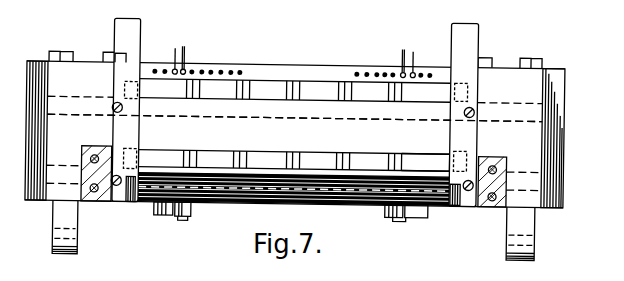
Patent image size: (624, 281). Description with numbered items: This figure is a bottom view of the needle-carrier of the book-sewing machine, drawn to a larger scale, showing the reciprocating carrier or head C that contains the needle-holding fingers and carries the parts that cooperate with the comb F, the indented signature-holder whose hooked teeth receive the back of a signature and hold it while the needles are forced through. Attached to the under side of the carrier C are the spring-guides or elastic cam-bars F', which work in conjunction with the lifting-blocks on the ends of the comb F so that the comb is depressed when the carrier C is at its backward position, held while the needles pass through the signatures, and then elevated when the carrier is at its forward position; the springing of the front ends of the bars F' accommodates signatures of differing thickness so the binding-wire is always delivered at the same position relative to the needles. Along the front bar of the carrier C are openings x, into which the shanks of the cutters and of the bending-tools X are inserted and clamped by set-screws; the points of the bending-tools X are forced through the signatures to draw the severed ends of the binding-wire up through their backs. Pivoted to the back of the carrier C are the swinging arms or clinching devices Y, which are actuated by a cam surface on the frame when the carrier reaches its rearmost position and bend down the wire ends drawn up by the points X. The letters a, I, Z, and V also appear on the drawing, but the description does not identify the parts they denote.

The end block a is at (28, 151).
The elastic cam-bar F' is at (295, 112).
The comb F is at (294, 91).
The lower box I is at (293, 161).
The end lower box Z is at (425, 163).
The reciprocating carrier C is at (294, 156).
The openings x is at (203, 66).
The pin V is at (294, 58).
The bending-tool X is at (293, 59).
The clinching device Y is at (290, 219).